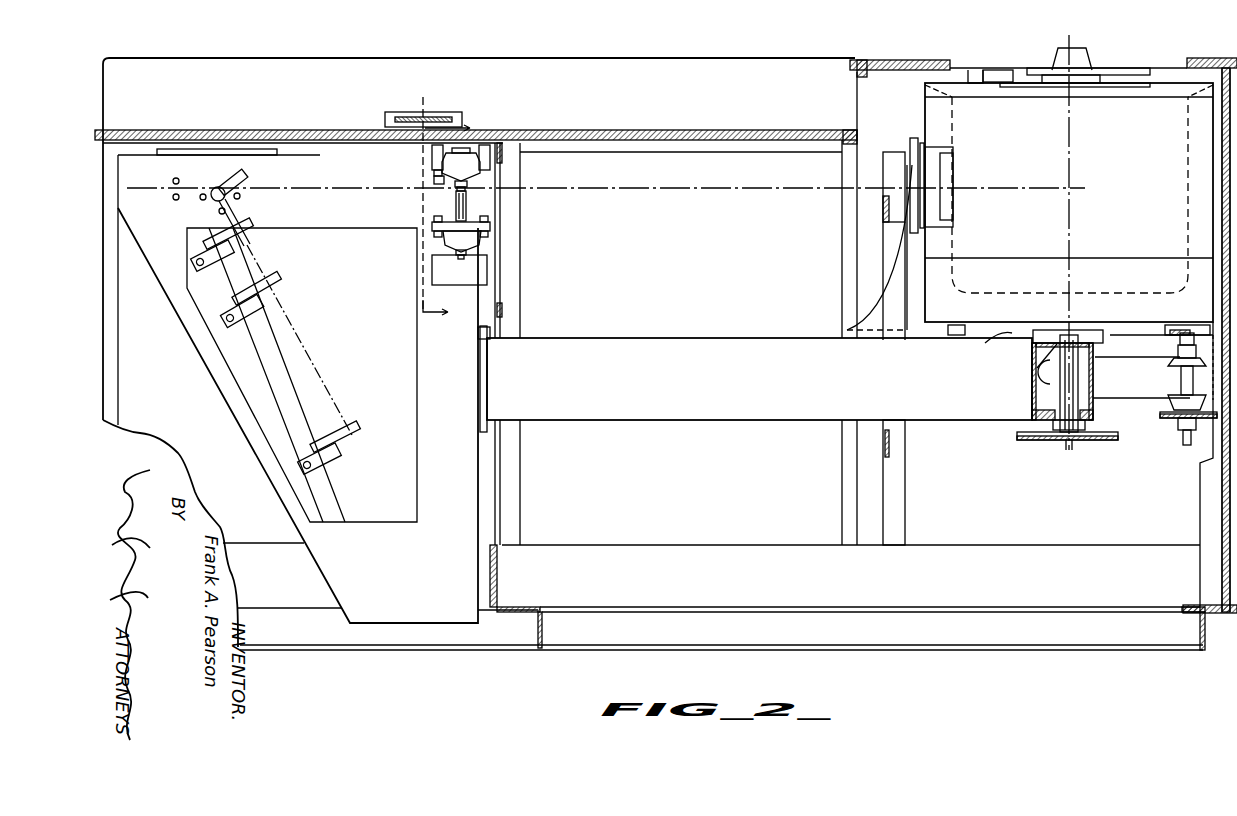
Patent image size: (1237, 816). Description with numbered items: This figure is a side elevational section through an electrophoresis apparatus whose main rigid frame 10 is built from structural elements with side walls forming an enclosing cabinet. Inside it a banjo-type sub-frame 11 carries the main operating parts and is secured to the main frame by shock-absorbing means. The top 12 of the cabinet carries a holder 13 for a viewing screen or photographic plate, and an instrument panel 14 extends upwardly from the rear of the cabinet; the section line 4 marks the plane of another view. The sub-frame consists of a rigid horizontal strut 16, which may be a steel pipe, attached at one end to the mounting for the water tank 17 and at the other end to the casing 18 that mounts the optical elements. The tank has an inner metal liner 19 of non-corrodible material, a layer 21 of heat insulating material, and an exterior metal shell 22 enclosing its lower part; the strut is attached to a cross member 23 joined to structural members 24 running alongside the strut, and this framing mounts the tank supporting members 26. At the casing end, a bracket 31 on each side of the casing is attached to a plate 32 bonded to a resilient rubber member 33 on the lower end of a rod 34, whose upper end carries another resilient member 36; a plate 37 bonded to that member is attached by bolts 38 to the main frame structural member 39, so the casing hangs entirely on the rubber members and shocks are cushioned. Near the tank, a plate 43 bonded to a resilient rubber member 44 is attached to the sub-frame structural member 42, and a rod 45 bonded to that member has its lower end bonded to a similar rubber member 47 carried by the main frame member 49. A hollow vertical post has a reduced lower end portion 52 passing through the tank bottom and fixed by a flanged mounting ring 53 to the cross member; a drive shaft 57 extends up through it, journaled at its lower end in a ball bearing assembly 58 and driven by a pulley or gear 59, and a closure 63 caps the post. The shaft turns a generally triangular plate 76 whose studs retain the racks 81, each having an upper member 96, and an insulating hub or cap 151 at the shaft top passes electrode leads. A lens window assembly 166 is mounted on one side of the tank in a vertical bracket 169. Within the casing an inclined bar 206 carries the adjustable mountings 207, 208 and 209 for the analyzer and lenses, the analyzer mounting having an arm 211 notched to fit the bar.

The section line 4- 4 is at (457, 214).
The main rigid frame 10 is at (495, 657).
The sub-frame 11 is at (955, 422).
The top 12 is at (607, 130).
The holder 13 is at (461, 104).
The instrument panel 14 is at (621, 66).
The horizontal strut 16 is at (698, 412).
The water tank 17 is at (1162, 85).
The casing 18 is at (192, 345).
The inner metal liner 19 is at (990, 294).
The layer of heat insulating material 21 is at (1194, 180).
The exterior metal shell 22 is at (989, 263).
The cross member 23 is at (1032, 365).
The structural members 24 is at (1128, 390).
The tank supporting members 26 is at (1005, 334).
The bracket 31 is at (445, 266).
The plate 32 is at (440, 232).
The resilient rubber member 33 is at (490, 243).
The rod 34 is at (456, 201).
The resilient member 36 is at (476, 172).
The plate 37 is at (432, 168).
The bolts 38 is at (440, 179).
The main frame structural member 39 is at (500, 162).
The structural member 42 is at (1210, 330).
The plate 43 is at (1178, 355).
The resilient rubber member 44 is at (1170, 366).
The rod 45 is at (1181, 386).
The rubber member 47 is at (1175, 419).
The member 49 is at (1206, 425).
The lower end portion 52 is at (1075, 330).
The flanged mounting ring 53 is at (1095, 344).
The drive shaft 57 is at (1068, 396).
The ball bearing assembly 58 is at (1060, 425).
The pulley or gear 59 is at (1045, 433).
The closure 63 is at (1087, 88).
The plate 76 is at (1108, 70).
The racks 81 is at (975, 64).
The upper member 96 is at (1012, 70).
The insulating hub or cap 151 is at (1060, 58).
The lens window assembly 166 is at (874, 213).
The vertical bracket 169 is at (875, 330).
The inclined bar 206 is at (275, 386).
The mounting 207 is at (264, 233).
The mounting 208 is at (294, 286).
The mounting 209 is at (364, 426).
The arm 211 is at (246, 246).